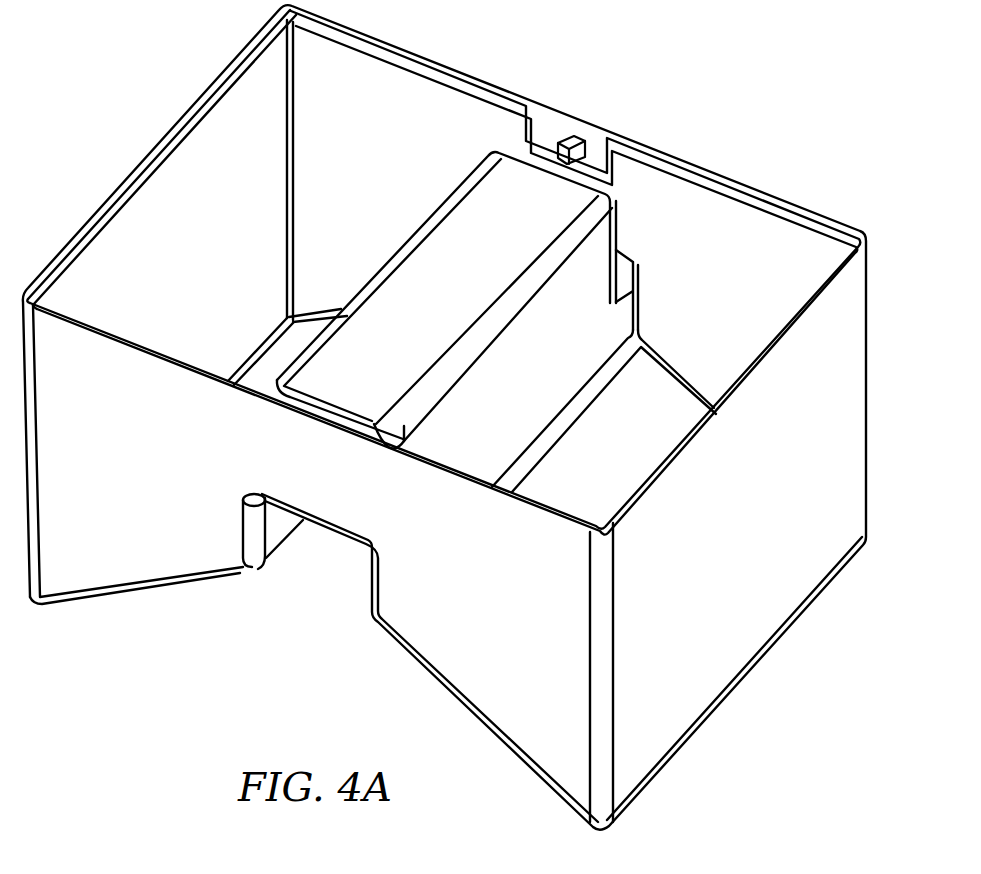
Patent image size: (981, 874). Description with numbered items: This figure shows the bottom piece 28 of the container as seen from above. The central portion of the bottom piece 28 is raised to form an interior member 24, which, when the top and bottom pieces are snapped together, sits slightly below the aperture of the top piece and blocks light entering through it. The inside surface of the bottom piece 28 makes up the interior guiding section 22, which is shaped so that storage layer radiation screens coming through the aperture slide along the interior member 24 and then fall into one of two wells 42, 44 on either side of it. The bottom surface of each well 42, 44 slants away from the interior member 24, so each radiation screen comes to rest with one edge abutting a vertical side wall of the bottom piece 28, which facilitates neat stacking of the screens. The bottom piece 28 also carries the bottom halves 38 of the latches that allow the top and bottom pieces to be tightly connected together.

The bottom piece 28 is at (710, 146).
The well 42 is at (200, 255).
The interior member 24 is at (470, 223).
The well 44 is at (645, 407).
The bottom half of latch 38 is at (570, 140).
The interior guiding section 22 is at (277, 525).